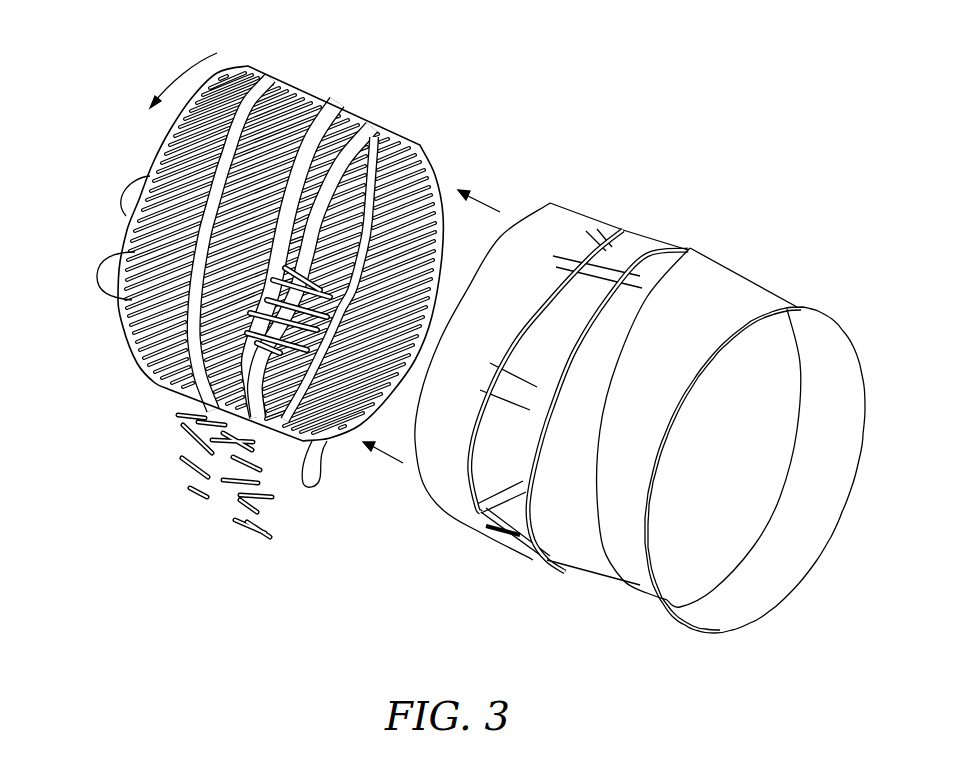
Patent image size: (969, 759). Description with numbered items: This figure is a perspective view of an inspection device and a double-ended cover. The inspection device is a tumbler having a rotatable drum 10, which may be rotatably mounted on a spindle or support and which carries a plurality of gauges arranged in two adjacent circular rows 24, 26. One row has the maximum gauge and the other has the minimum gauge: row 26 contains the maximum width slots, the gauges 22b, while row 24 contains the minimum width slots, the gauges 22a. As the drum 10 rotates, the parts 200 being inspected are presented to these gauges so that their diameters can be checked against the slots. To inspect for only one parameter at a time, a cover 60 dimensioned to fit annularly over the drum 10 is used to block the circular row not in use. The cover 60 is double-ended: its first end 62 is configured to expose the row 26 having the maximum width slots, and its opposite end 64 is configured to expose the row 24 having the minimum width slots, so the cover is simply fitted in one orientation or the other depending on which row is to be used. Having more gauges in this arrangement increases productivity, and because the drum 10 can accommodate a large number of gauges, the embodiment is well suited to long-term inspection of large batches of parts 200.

The drum 10 is at (273, 239).
The gauges 22a is at (133, 266).
The gauges 22b is at (310, 476).
The circular row 24 is at (289, 68).
The circular row 26 is at (357, 112).
The cover 60 is at (549, 563).
The first end 62 is at (465, 512).
The opposite end 64 is at (650, 587).
The parts 200 is at (203, 443).